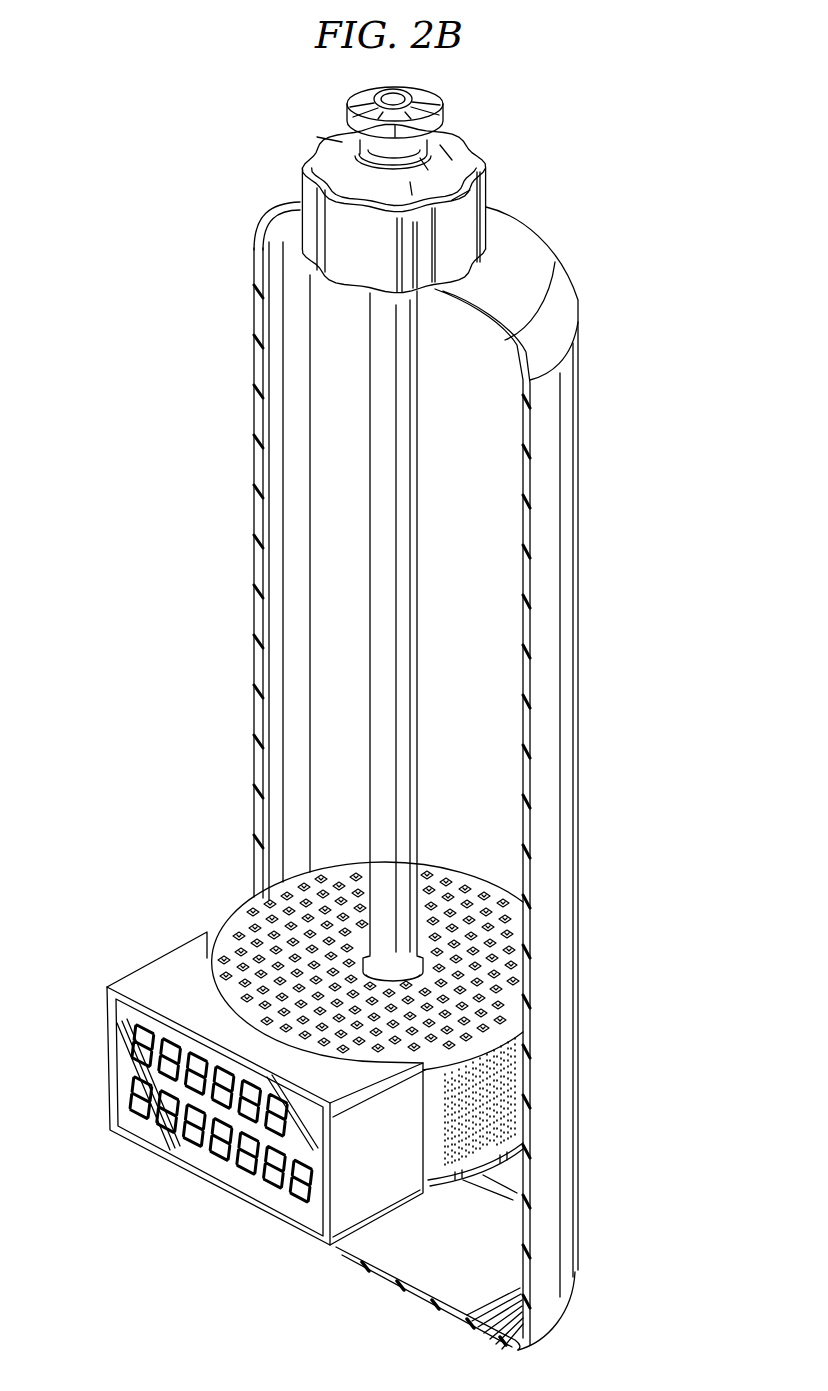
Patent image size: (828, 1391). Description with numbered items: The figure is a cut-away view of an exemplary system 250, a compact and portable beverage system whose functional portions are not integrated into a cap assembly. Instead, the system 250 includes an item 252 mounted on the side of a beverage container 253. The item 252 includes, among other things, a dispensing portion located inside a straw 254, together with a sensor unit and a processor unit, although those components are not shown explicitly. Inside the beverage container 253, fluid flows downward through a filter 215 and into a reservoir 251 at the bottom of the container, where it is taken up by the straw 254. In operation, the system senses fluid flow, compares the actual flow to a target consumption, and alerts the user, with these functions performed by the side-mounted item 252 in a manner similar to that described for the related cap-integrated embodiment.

The system 250 is at (156, 376).
The reservoir 251 is at (447, 1283).
The item 252 is at (228, 1174).
The beverage container 253 is at (580, 708).
The straw 254 is at (418, 600).
The filter 215 is at (470, 882).